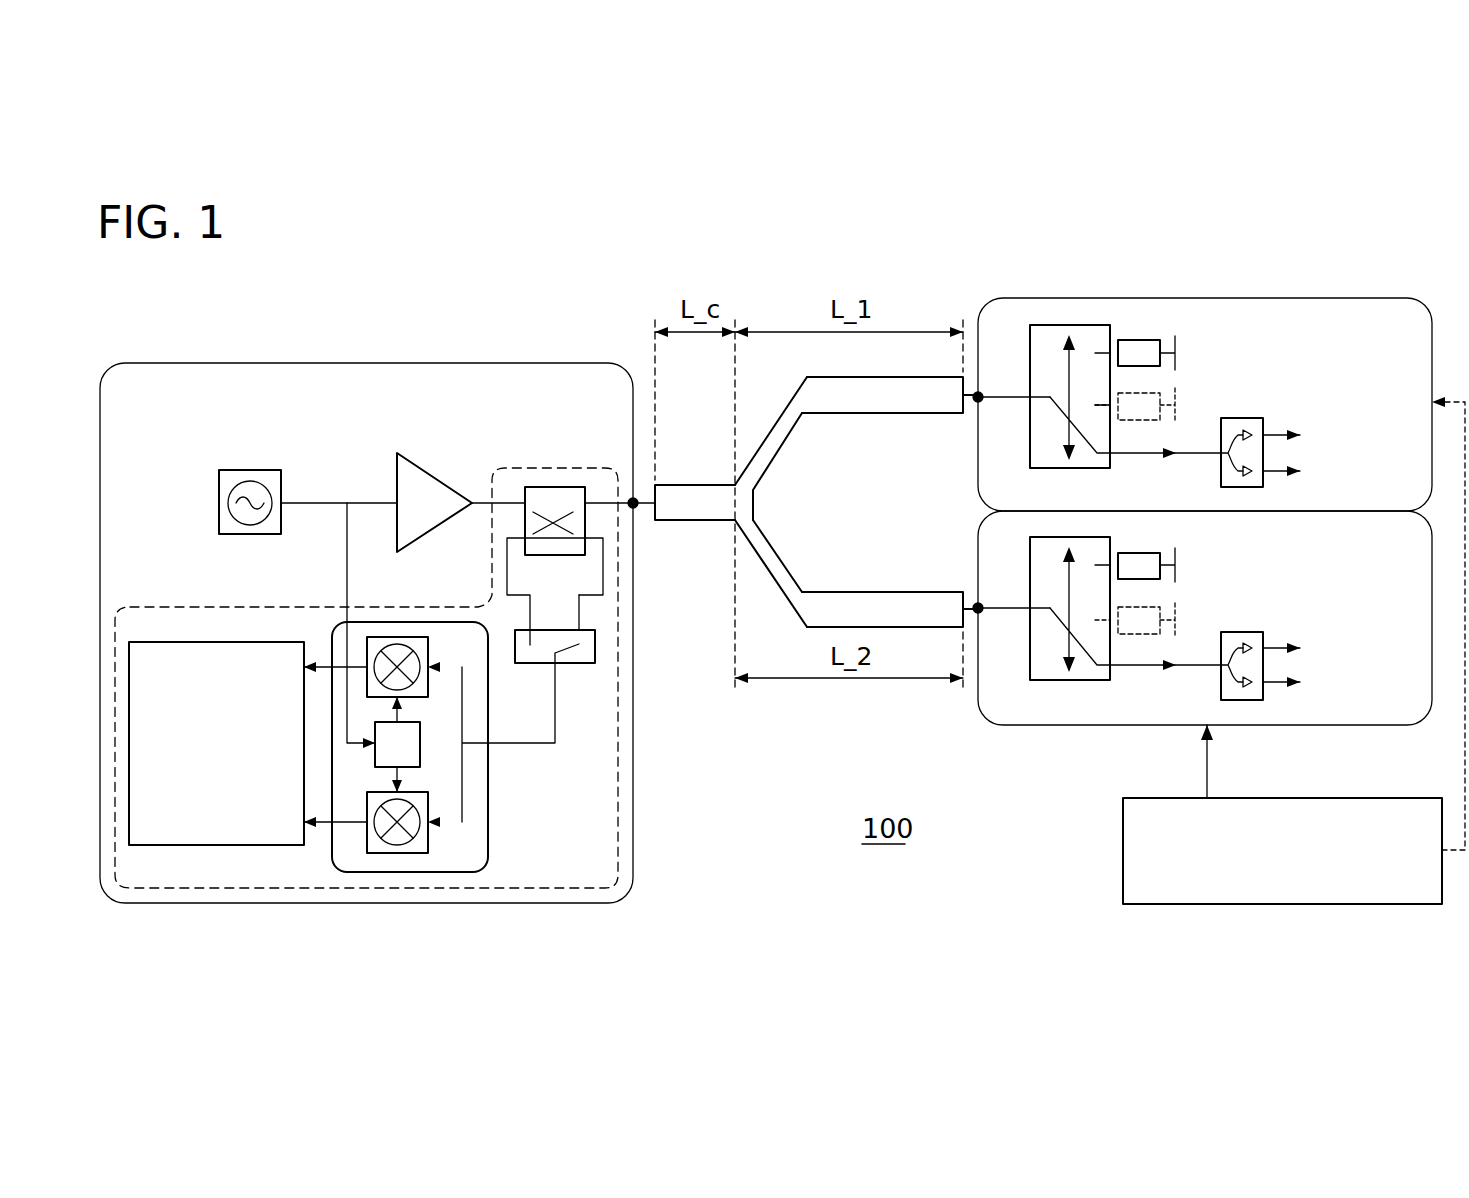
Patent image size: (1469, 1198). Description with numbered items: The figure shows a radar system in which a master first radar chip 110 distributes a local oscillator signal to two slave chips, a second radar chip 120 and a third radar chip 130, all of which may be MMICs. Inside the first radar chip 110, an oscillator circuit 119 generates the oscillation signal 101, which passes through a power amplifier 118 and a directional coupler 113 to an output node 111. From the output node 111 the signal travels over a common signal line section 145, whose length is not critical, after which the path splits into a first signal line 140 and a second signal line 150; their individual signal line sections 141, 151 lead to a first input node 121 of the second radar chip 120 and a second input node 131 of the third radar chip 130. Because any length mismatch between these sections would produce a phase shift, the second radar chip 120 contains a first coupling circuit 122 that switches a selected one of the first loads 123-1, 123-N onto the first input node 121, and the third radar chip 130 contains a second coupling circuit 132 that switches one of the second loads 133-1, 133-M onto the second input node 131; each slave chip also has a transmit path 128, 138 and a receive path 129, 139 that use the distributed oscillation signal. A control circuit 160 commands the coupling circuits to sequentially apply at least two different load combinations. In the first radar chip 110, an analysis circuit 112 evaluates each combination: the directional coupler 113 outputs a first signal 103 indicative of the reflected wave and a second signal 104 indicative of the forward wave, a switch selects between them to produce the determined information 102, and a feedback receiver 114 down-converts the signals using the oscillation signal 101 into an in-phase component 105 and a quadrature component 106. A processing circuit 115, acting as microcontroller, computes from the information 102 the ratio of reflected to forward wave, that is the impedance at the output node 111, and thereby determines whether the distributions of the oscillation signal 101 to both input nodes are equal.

The first radar chip 110 is at (364, 363).
The oscillator circuit 119 is at (219, 503).
The oscillation signal 101 is at (310, 503).
The power amplifier 118 is at (458, 480).
The directional coupler 113 is at (558, 487).
The first signal 103 is at (530, 612).
The second signal 104 is at (603, 598).
The information 102 is at (520, 743).
The in-phase component 105 is at (316, 667).
The processing circuit 115 is at (205, 642).
The analysis circuit 112 is at (618, 770).
The feedback receiver 114 is at (488, 812).
The quadrature component 106 is at (315, 845).
The output node 111 is at (638, 508).
The common signal line section 145 is at (694, 485).
The first signal line 140 is at (790, 445).
The signal line section 141 is at (918, 413).
The second signal line 150 is at (790, 562).
The signal line section 151 is at (918, 592).
The second radar chip 120 is at (1282, 298).
The first input node 121 is at (980, 392).
The first coupling circuit 122 is at (1052, 325).
The first load 123-1 is at (1136, 340).
The first load 123-N is at (1143, 420).
The transmit path 128 is at (1335, 433).
The receive path 129 is at (1335, 473).
The third radar chip 130 is at (1280, 725).
The second input node 131 is at (980, 603).
The second coupling circuit 132 is at (1052, 680).
The second load 133-1 is at (1150, 553).
The second load 133-M is at (1143, 634).
The transmit path 138 is at (1335, 646).
The receive path 139 is at (1335, 684).
The control circuit 160 is at (1294, 650).